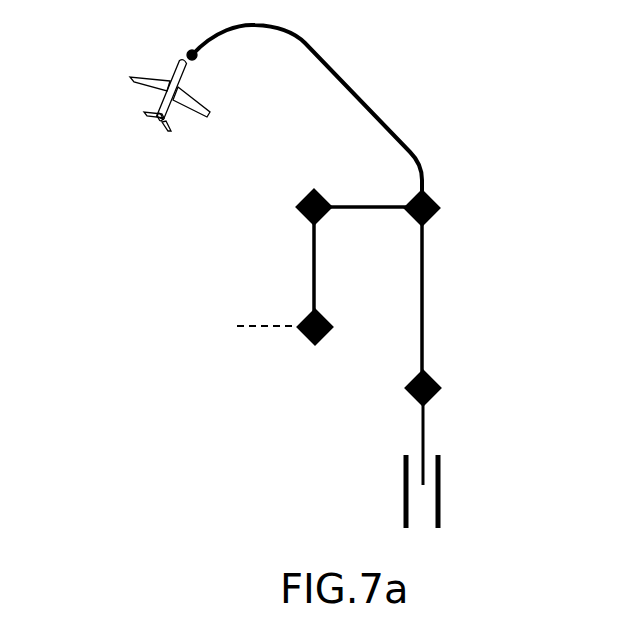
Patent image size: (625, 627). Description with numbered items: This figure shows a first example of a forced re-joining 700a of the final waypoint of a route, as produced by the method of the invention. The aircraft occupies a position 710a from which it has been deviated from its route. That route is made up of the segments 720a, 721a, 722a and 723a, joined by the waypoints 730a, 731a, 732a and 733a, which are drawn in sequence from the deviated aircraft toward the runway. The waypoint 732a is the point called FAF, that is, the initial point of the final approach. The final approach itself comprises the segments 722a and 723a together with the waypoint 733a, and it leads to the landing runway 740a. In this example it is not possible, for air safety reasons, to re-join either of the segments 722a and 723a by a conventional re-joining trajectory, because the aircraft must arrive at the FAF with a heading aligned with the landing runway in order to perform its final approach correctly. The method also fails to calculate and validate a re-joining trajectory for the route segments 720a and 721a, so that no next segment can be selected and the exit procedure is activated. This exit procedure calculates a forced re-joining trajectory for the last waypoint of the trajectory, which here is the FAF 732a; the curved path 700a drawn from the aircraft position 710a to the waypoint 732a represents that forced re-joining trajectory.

The forced re-joining trajectory 700a is at (342, 79).
The aircraft position 710a is at (142, 88).
The route segment 720a is at (313, 277).
The route segment 721a is at (373, 207).
The final approach segment 722a is at (423, 307).
The final approach segment 723a is at (423, 432).
The waypoint 730a is at (298, 332).
The waypoint 731a is at (297, 208).
The FAF waypoint 732a is at (440, 213).
The waypoint 733a is at (437, 390).
The landing runway 740a is at (405, 485).